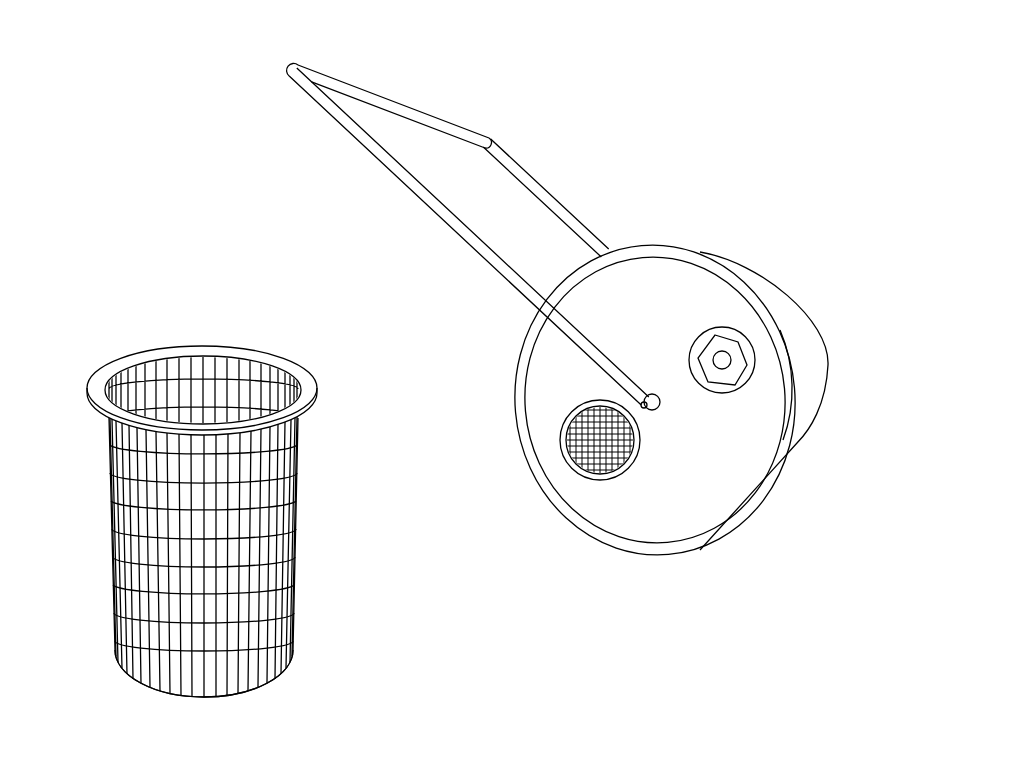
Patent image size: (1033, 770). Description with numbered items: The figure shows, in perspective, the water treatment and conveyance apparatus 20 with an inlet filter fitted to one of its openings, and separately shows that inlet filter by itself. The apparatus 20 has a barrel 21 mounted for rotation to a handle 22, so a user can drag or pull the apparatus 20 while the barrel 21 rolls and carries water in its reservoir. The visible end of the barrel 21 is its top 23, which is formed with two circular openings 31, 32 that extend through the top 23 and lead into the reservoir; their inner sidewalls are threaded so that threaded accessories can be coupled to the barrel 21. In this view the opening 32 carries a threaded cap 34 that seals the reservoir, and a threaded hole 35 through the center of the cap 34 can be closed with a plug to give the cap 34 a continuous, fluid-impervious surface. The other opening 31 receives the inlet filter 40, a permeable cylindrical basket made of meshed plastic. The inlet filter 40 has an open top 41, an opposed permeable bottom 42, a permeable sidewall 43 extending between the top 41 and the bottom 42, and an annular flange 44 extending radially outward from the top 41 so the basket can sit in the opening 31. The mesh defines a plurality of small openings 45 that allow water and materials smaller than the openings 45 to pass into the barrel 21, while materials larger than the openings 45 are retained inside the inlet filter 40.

In FIG. 2A, the water treatment and conveyance apparatus 20 is at (287, 50).
In FIG. 2A, the barrel 21 is at (812, 335).
In FIG. 2A, the handle 22 is at (381, 163).
In FIG. 2A, the top 23 is at (735, 495).
In FIG. 2A, the opening 31 is at (610, 478).
In FIG. 2A, the opening 32 is at (722, 394).
In FIG. 2A, the cap 34 is at (721, 326).
In FIG. 2A, the hole 35 is at (712, 360).
In FIG. 2A, the inlet filter 40 is at (568, 447).
In FIG. 2B, the inlet filter 40 is at (302, 619).
In FIG. 2B, the open top 41 is at (318, 393).
In FIG. 2B, the permeable bottom 42 is at (291, 652).
In FIG. 2B, the permeable sidewall 43 is at (113, 523).
In FIG. 2B, the annular flange 44 is at (88, 393).
In FIG. 2B, the small openings 45 is at (130, 616).